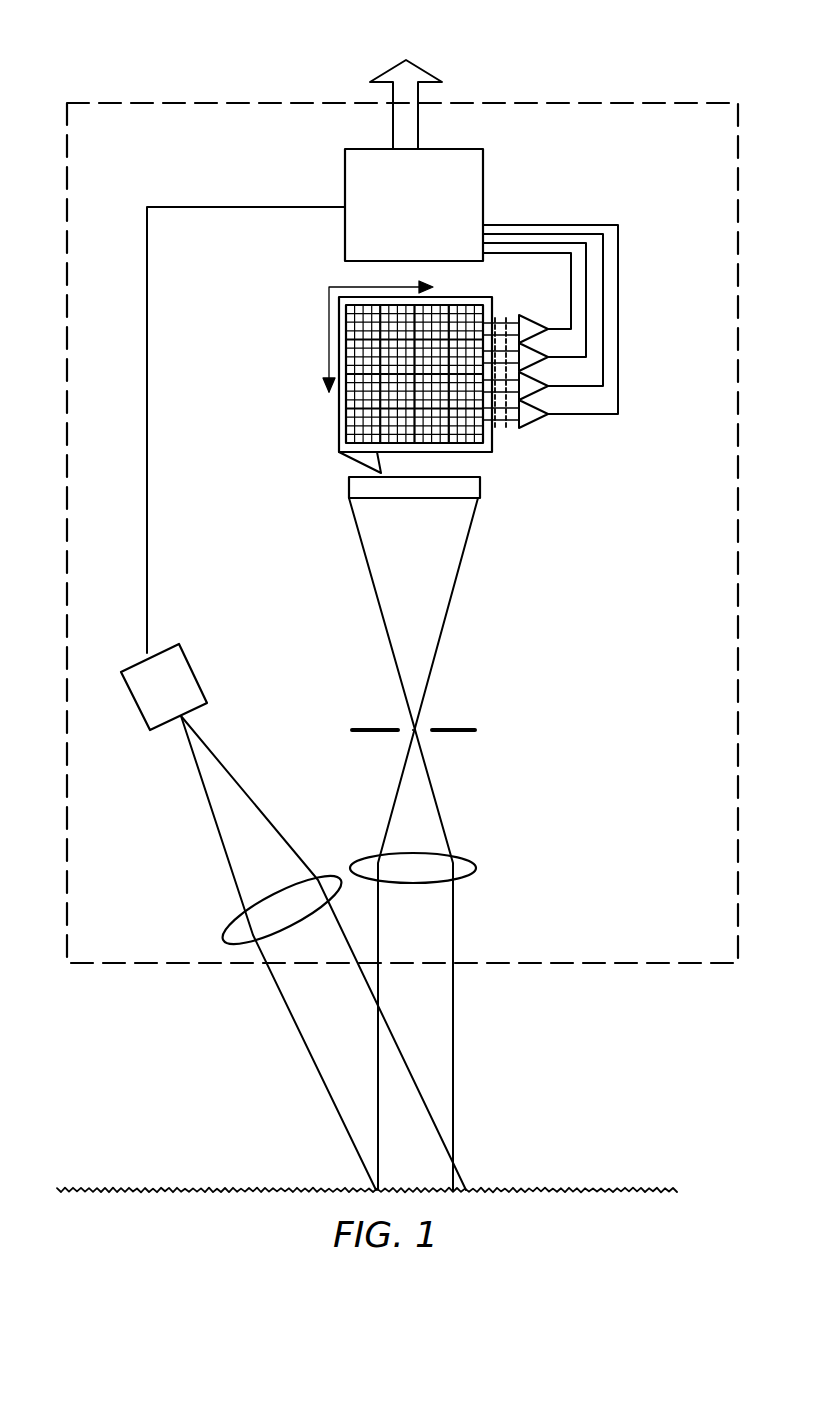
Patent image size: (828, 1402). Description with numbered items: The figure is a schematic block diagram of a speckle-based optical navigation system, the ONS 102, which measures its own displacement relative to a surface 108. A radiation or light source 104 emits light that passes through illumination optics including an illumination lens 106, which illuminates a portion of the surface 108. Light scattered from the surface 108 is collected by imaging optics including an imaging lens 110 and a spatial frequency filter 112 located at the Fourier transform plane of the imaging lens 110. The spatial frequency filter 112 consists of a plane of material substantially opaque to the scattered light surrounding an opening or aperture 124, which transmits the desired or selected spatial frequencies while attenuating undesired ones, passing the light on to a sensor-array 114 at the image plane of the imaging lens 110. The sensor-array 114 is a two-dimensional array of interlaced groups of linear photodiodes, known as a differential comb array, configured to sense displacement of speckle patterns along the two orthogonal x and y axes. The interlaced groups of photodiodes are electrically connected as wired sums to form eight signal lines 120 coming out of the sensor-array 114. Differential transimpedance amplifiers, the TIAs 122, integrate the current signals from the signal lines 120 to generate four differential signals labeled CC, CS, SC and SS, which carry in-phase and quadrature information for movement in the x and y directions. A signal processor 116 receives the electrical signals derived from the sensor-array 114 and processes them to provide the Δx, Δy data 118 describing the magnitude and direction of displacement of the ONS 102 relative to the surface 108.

The optical navigation system 102 is at (708, 135).
The light source 104 is at (207, 667).
The illumination lens 106 is at (223, 944).
The surface 108 is at (187, 1189).
The imaging lens 110 is at (477, 868).
The spatial frequency filter 112 is at (478, 729).
The sensor-array 114 is at (339, 432).
The signal processor 116 is at (435, 218).
The Δx, Δy data 118 is at (445, 48).
The signal lines 120 is at (500, 318).
The differential transimpedance amplifiers 122 is at (536, 438).
The aperture 124 is at (428, 718).